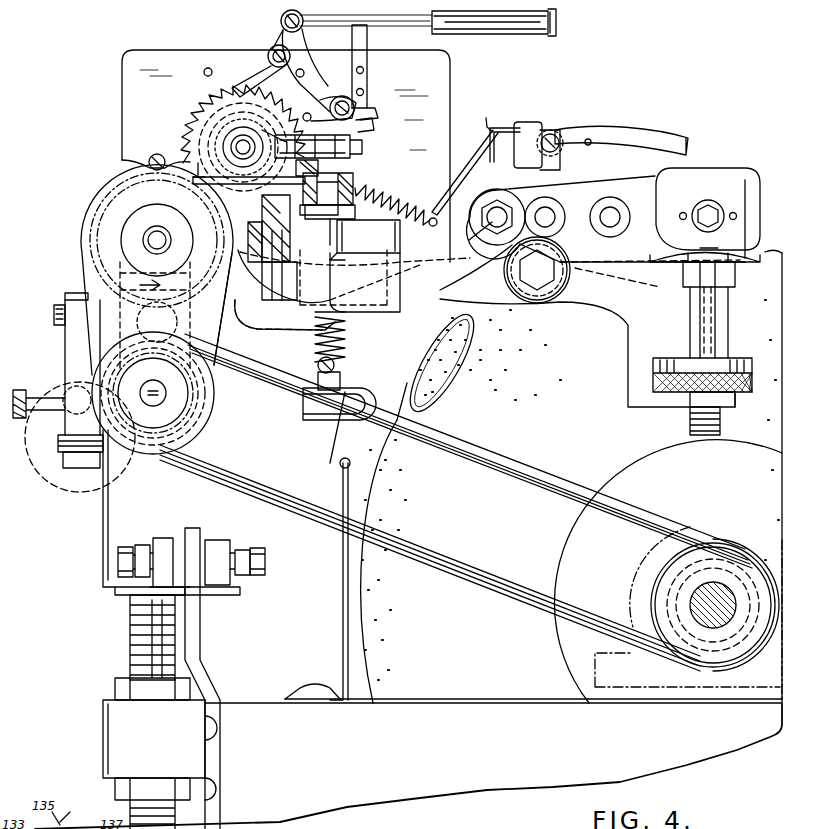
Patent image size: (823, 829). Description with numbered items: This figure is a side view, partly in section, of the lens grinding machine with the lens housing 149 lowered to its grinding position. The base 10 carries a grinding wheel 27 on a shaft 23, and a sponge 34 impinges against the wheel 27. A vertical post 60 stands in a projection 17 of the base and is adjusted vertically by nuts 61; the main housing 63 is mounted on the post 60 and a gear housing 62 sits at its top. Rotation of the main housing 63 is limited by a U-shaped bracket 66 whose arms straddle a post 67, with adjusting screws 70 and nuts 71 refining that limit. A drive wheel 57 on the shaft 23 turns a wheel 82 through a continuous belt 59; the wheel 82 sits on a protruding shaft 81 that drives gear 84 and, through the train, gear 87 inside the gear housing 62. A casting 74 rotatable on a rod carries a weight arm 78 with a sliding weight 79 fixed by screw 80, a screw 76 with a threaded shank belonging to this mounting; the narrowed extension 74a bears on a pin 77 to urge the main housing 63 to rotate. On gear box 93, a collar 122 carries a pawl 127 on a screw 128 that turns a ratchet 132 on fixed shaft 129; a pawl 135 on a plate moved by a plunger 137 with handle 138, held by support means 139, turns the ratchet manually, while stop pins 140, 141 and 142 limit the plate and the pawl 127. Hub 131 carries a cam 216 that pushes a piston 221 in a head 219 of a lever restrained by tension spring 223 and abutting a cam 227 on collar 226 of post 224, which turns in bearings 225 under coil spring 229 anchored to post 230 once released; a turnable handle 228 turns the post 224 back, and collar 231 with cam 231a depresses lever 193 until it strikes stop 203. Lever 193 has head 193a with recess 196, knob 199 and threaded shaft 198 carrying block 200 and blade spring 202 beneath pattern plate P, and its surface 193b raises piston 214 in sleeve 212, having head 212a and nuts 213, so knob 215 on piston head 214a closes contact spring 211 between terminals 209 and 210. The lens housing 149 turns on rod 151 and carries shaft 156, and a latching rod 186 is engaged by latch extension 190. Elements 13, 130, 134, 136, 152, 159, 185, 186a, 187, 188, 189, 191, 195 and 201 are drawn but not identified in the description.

The base 10 is at (487, 786).
The base plate 13 is at (283, 700).
The projection 17 is at (103, 737).
The shaft 23 is at (722, 579).
The grinding wheel 27 is at (554, 320).
The sponge 34 is at (426, 352).
The drive wheel 57 is at (695, 650).
The continuous belt 59 is at (470, 447).
The vertical post 60 is at (130, 637).
The nuts 61 is at (118, 684).
The gear housing 62 is at (92, 182).
The main housing 63 is at (93, 519).
The bracket 66 is at (226, 588).
The post 67 is at (206, 672).
The adjusting screws 70 is at (118, 562).
The adjusting nuts 71 is at (143, 548).
The casting 74 is at (66, 343).
The narrowed extension 74a is at (72, 466).
The screw 76 is at (54, 312).
The pin 77 is at (64, 299).
The weight arm 78 is at (72, 410).
The weight 79 is at (32, 436).
The screw 80 is at (20, 389).
The protruding shaft 81 is at (166, 392).
The wheel 82 is at (212, 395).
The gear 84 is at (130, 292).
The gear 87 is at (112, 218).
The gear box 93 is at (461, 79).
The collar 122 is at (372, 106).
The pawl 127 is at (311, 100).
The screw 128 is at (356, 108).
The fixed shaft 129 is at (247, 138).
The ratchet disc 130 is at (224, 140).
The hub 131 is at (215, 134).
The ratchet 132 is at (200, 117).
The lever arm 134 is at (278, 42).
The pawl 135 is at (268, 55).
The pivot screw 136 is at (281, 19).
The plunger 137 is at (438, 31).
The screw-on handle 138 is at (497, 36).
The support means 139 is at (402, 27).
The stop pin 140 is at (304, 69).
The stop pin 141 is at (206, 67).
The stop pin 142 is at (358, 136).
The lens housing 149 is at (721, 158).
The rod 151 is at (496, 224).
The nut 152 is at (490, 193).
The shaft 156 is at (547, 207).
The hole 159 is at (611, 207).
The hex nut 185 is at (700, 210).
The latching rod 186 is at (482, 164).
The link hook 186a is at (486, 130).
The arm 187 is at (641, 130).
The screw 188 is at (556, 136).
The block 189 is at (531, 124).
The latch extension 190 is at (491, 126).
The plate 191 is at (567, 156).
The lever 193 is at (600, 300).
The head 193a is at (639, 340).
The lever surface 193b is at (222, 300).
The pivot bolt 195 is at (546, 268).
The recess 196 is at (734, 358).
The partly threaded shaft 198 is at (722, 426).
The turning knob 199 is at (740, 396).
The block 200 is at (728, 277).
The spindle 201 is at (738, 250).
The blade spring 202 is at (762, 262).
The stop 203 is at (348, 260).
The terminal 209 is at (172, 147).
The terminal 210 is at (298, 171).
The contact spring 211 is at (215, 178).
The vertical sleeve 212 is at (292, 275).
The head 212a is at (240, 216).
The nuts 213 is at (252, 262).
The piston 214 is at (300, 280).
The head 214a is at (214, 209).
The knob 215 is at (264, 185).
The cam 216 is at (271, 134).
The head 219 is at (356, 147).
The piston 221 is at (350, 122).
The tension spring 223 is at (386, 199).
The post 224 is at (338, 374).
The bearings 225 is at (356, 212).
The collar 226 is at (356, 180).
The cam 227 is at (308, 246).
The turnable handle 228 is at (350, 421).
The coil spring 229 is at (347, 339).
The post 230 is at (386, 312).
The collar 231 is at (282, 325).
The cam 231a is at (372, 284).
The pattern plate P is at (735, 186).